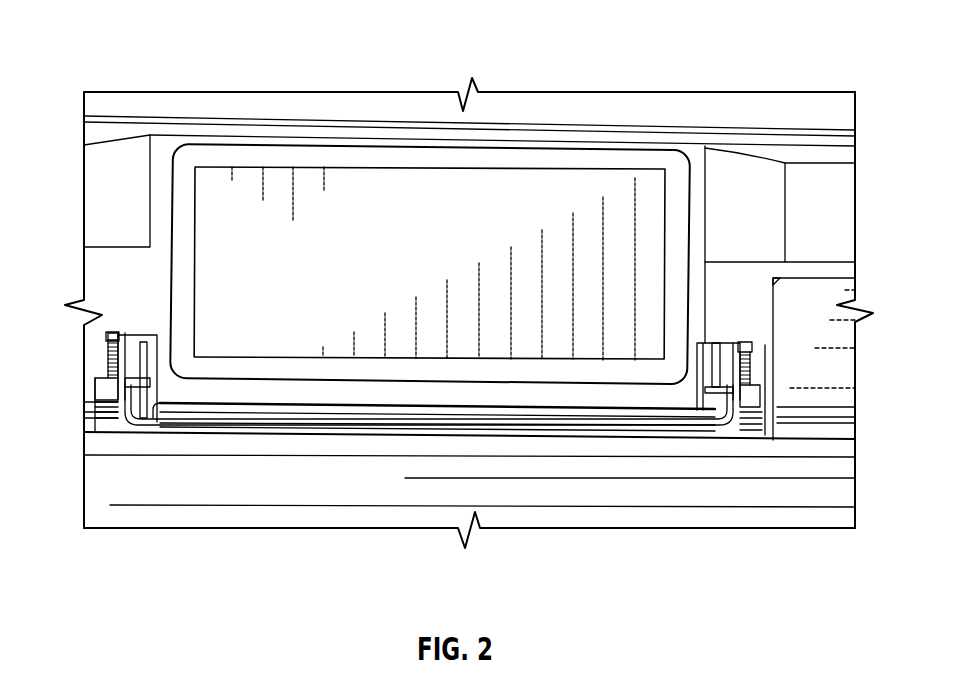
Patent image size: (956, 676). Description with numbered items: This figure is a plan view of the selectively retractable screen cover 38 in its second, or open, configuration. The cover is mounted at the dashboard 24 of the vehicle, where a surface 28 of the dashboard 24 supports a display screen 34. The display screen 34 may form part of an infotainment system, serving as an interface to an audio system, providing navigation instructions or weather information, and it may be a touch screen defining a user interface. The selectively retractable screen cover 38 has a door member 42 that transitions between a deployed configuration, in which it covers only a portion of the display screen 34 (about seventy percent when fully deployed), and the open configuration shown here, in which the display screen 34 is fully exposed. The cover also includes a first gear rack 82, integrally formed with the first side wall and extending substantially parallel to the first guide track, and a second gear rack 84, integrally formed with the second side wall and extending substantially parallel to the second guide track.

The dashboard 24 is at (152, 464).
The surface 28 is at (125, 442).
The display screen 34 is at (363, 233).
The selectively retractable screen cover 38 is at (99, 352).
The door member 42 is at (375, 432).
The first gear rack 82 is at (108, 335).
The second gear rack 84 is at (747, 342).